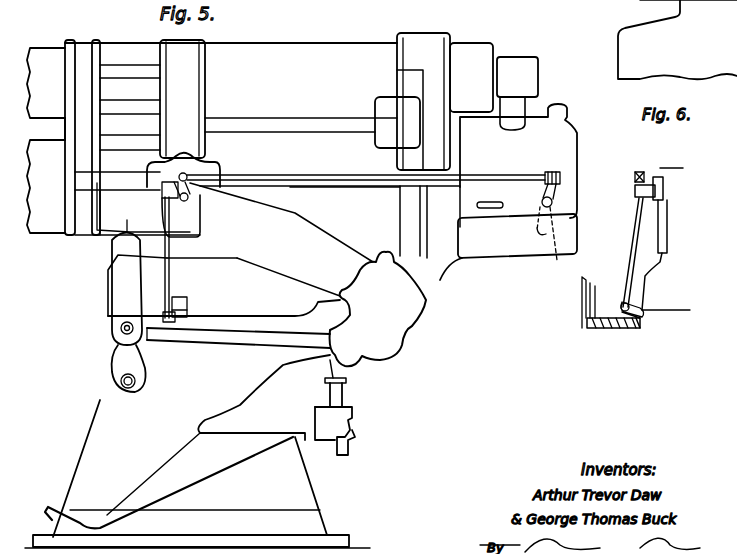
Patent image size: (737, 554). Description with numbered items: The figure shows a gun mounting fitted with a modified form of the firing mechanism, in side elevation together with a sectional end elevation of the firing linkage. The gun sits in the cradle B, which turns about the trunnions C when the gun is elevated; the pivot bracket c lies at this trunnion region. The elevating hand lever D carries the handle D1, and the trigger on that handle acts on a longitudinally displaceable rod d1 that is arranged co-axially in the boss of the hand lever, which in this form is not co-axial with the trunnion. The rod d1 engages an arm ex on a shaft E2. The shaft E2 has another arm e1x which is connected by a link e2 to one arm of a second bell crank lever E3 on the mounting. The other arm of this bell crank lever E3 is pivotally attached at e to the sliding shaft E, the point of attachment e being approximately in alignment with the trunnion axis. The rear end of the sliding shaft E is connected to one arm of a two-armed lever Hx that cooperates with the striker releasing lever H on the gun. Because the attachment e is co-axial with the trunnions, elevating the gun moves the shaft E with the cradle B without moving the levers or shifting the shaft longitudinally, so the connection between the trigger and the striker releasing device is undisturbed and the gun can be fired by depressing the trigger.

In FIG. 5, the cradle B is at (182, 99).
In FIG. 5, the trunnion C is at (190, 168).
In FIG. 5, the pivot link c is at (190, 182).
In FIG. 5, the longitudinally arranged shaft E is at (405, 175).
In FIG. 5, the link e2 is at (170, 249).
In FIG. 6, the link e2 is at (633, 237).
In FIG. 5, the arm e1x is at (185, 305).
In FIG. 6, the arm e1x is at (632, 302).
In FIG. 5, the shaft E2 is at (150, 330).
In FIG. 6, the shaft E2 is at (641, 312).
In FIG. 5, the elevating hand lever D is at (122, 364).
In FIG. 5, the handle D1 is at (136, 384).
In FIG. 5, the crank pivot Hx is at (553, 200).
In FIG. 5, the crank H is at (547, 242).
In FIG. 6, the second bell crank lever E3 is at (641, 176).
In FIG. 6, the pivotal attachment point e is at (663, 177).
In FIG. 6, the longitudinally displaceable rod d1 is at (592, 329).
In FIG. 6, the arm ex is at (639, 329).